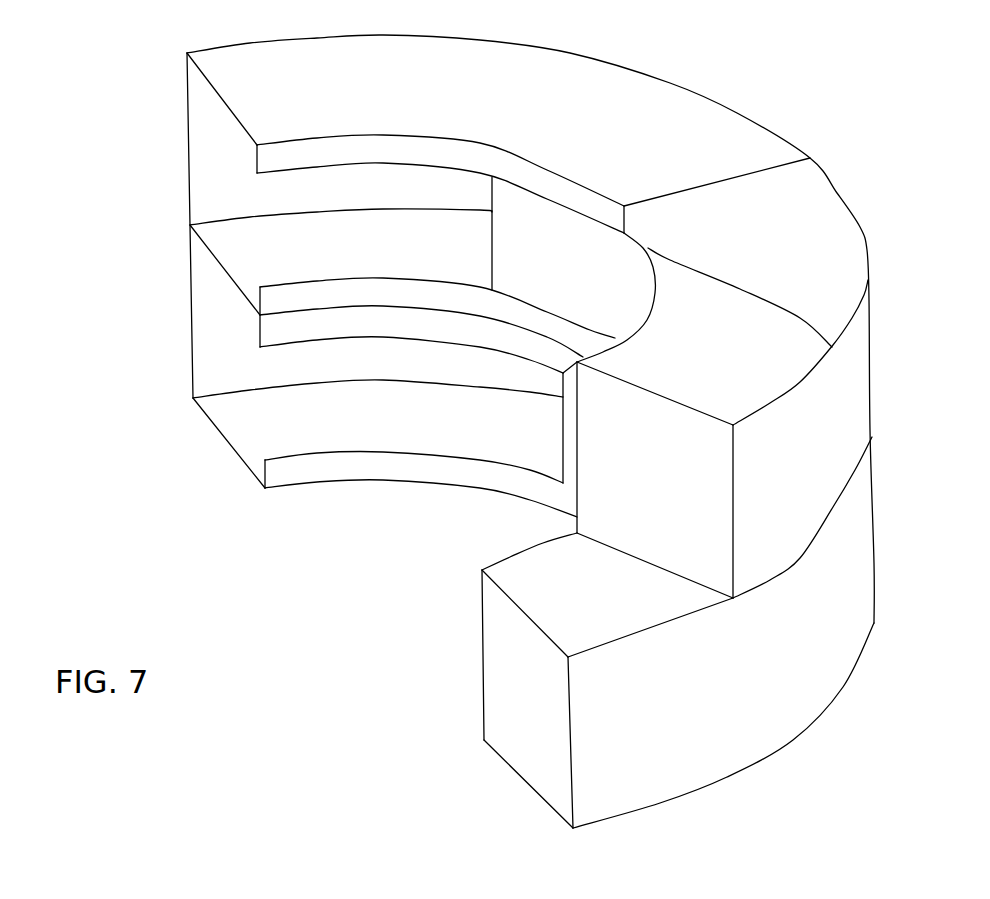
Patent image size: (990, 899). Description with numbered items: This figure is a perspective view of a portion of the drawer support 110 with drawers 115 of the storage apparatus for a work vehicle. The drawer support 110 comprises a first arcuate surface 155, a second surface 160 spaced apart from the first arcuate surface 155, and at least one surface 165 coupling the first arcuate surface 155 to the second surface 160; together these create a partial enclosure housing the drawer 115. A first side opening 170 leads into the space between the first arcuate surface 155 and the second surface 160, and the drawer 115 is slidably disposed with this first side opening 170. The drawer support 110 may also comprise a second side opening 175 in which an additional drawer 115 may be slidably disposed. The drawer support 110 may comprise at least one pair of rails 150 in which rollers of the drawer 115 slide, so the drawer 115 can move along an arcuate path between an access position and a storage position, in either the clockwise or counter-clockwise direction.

The drawer support 110 is at (293, 102).
The drawer 115 is at (848, 355).
The rails 150 is at (517, 313).
The first arcuate surface 155 is at (570, 187).
The second surface 160 is at (222, 135).
The surface coupling the first arcuate surface to the second surface 165 is at (405, 102).
The first side opening 170 is at (626, 222).
The second side opening 175 is at (233, 182).